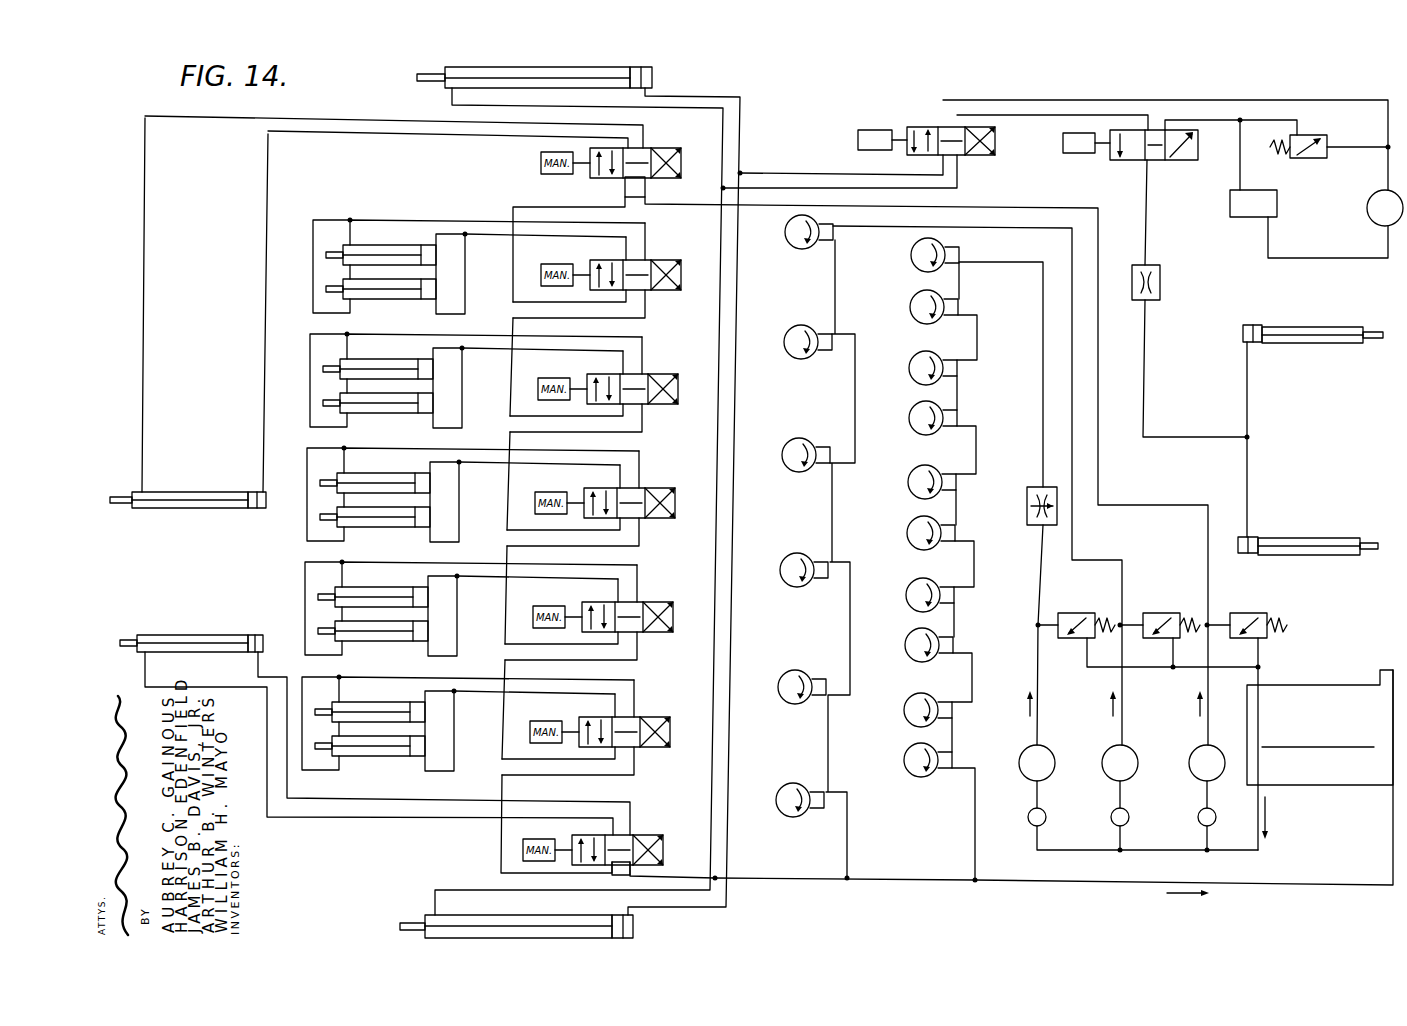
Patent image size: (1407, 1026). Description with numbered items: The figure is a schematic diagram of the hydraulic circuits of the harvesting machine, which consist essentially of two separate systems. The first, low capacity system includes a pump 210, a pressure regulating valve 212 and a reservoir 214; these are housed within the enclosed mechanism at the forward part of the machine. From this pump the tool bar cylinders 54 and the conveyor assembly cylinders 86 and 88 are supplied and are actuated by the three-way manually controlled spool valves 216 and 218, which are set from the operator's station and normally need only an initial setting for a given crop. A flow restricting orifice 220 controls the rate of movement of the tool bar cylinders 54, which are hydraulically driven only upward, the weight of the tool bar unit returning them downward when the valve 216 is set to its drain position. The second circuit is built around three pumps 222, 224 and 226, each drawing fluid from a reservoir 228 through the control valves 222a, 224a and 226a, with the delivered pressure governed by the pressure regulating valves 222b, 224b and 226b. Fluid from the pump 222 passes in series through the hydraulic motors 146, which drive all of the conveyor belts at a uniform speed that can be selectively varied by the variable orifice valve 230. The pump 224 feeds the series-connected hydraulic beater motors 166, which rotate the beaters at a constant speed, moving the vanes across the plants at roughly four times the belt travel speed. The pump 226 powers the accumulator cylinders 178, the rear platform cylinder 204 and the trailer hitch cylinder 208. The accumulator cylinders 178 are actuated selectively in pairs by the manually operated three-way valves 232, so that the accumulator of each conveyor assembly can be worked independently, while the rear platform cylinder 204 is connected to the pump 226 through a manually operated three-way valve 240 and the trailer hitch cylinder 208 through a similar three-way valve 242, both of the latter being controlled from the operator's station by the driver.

The tool bar cylinders 54 is at (1290, 345).
The conveyor assembly cylinder 86 is at (654, 80).
The conveyor assembly cylinder 88 is at (635, 928).
The hydraulic motors 146 is at (917, 300).
The hydraulic beater motors 166 is at (802, 249).
The accumulator cylinders 178 is at (473, 503).
The rear platform cylinder 204 is at (210, 635).
The trailer hitch cylinder 208 is at (203, 492).
The pump 210 is at (1367, 208).
The pressure regulating valve 212 is at (1307, 158).
The reservoir 214 is at (1242, 217).
The three-way manually controlled spool valve 216 is at (1125, 160).
The three-way manually controlled spool valve 218 is at (993, 155).
The flow restricting orifice 220 is at (1160, 287).
The pump 222 is at (1046, 747).
The control valve 222a is at (1029, 826).
The pressure regulating valve 222b is at (1070, 613).
The pump 224 is at (1129, 748).
The control valve 224a is at (1111, 824).
The pressure regulating valve 224b is at (1158, 613).
The pump 226 is at (1195, 778).
The control valve 226a is at (1198, 824).
The pressure regulating valve 226b is at (1246, 613).
The reservoir 228 is at (1300, 774).
The variable orifice valve 230 is at (1028, 487).
The manually operated three-way valves 232 is at (606, 499).
The manually operated three-way valve 240 is at (665, 835).
The three-way manually operated valve 242 is at (676, 148).